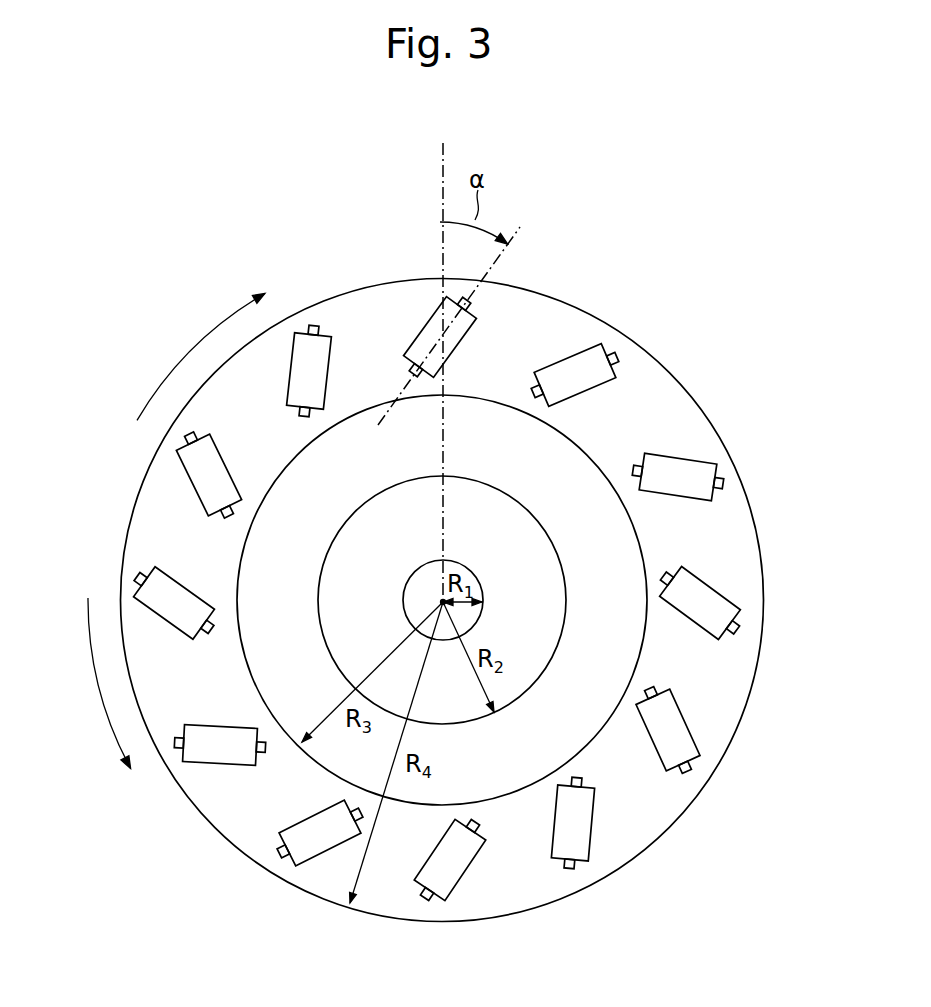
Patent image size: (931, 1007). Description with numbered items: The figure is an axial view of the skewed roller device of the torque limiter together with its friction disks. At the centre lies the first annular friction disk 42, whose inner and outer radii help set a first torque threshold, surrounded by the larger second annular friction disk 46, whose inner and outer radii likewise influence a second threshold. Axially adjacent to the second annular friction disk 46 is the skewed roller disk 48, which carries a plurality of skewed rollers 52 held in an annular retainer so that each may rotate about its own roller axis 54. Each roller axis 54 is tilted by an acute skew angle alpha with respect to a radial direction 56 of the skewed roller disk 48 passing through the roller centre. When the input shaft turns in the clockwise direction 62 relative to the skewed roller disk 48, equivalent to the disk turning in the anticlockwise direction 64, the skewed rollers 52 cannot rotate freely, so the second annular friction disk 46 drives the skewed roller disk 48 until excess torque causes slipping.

The first annular friction disk 42 is at (520, 530).
The second annular friction disk 46 is at (738, 560).
The skewed roller disk 48 is at (612, 848).
The skewed roller 52 is at (678, 737).
The roller axis 54 is at (507, 250).
The radial direction 56 is at (443, 176).
The clockwise direction 62 is at (183, 357).
The anticlockwise direction 64 is at (103, 707).